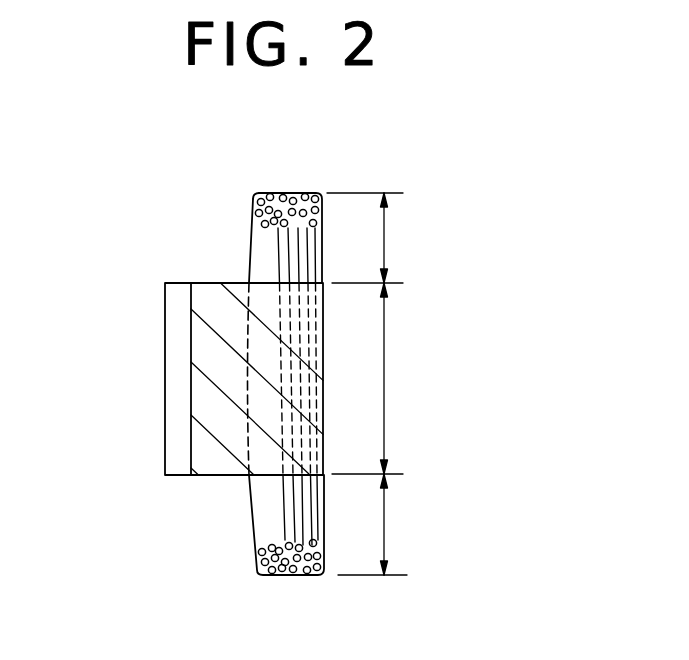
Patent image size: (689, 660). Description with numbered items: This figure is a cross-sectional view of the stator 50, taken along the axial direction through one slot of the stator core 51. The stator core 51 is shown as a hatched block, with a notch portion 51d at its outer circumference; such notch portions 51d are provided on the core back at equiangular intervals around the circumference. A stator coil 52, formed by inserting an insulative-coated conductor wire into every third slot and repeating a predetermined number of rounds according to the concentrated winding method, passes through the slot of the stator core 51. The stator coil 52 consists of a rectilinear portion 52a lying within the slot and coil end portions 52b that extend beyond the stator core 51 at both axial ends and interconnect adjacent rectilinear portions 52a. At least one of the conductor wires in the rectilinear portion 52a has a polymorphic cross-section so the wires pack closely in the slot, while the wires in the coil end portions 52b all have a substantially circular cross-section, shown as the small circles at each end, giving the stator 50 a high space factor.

The stator 50 is at (123, 268).
The stator core 51 is at (222, 481).
The notch portion 51d is at (177, 360).
The stator coil 52 is at (248, 238).
The rectilinear portion 52a is at (394, 378).
The coil end portion 52b is at (391, 384).